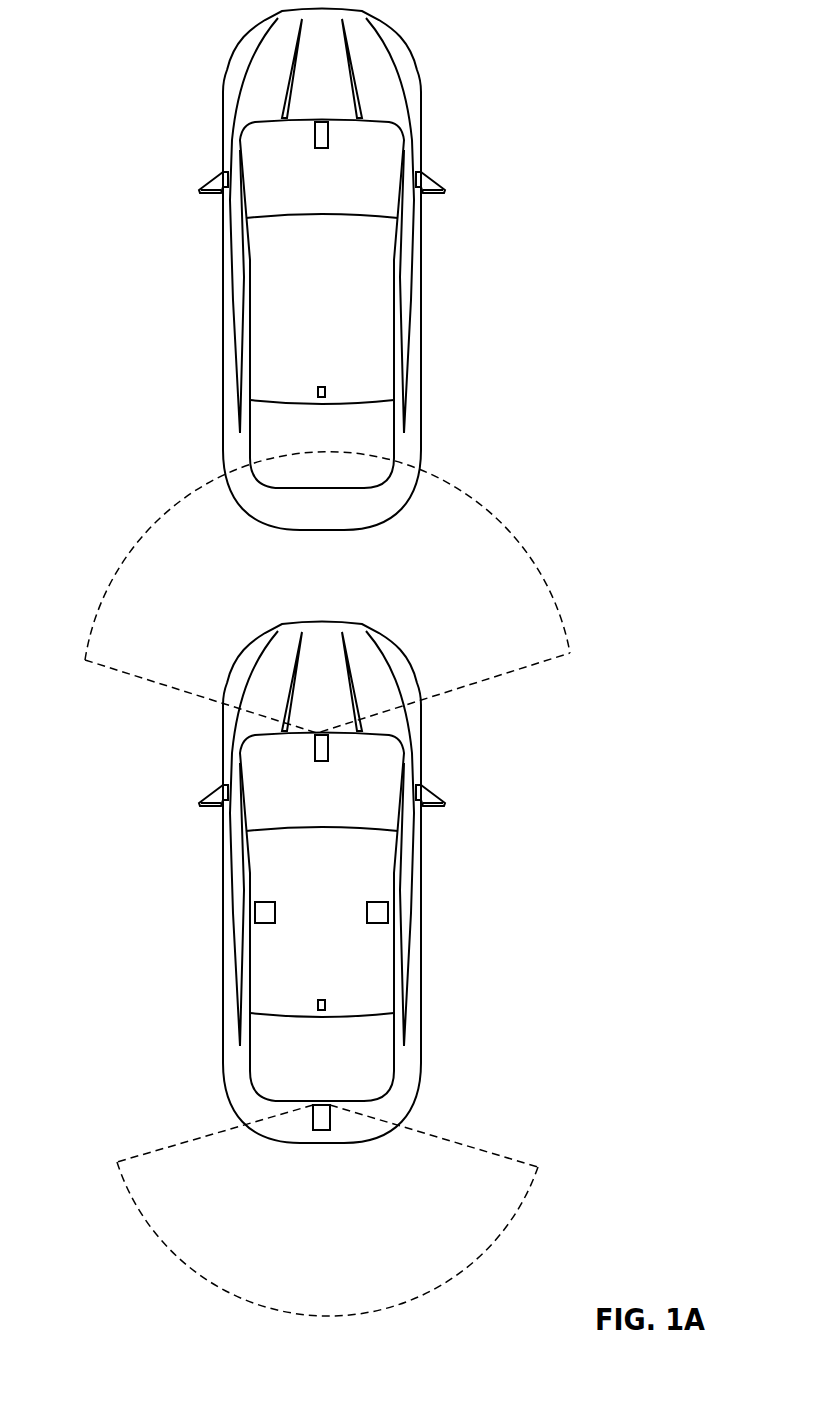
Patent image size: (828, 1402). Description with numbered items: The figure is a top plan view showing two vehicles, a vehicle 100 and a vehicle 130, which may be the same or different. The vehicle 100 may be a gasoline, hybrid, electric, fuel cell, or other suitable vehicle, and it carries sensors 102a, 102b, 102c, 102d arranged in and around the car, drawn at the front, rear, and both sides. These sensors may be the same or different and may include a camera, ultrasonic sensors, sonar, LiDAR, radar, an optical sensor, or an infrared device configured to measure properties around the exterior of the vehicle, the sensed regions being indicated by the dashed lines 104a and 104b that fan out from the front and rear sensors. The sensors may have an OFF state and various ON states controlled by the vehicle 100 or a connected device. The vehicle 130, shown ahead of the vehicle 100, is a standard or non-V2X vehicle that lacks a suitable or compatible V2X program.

The vehicle 100 is at (217, 1062).
The sensor 102a is at (303, 749).
The sensor 102b is at (303, 1121).
The sensor 102c is at (246, 914).
The sensor 102d is at (398, 911).
The dashed lines 104a is at (523, 542).
The dashed lines 104b is at (484, 1139).
The vehicle 130 is at (214, 221).